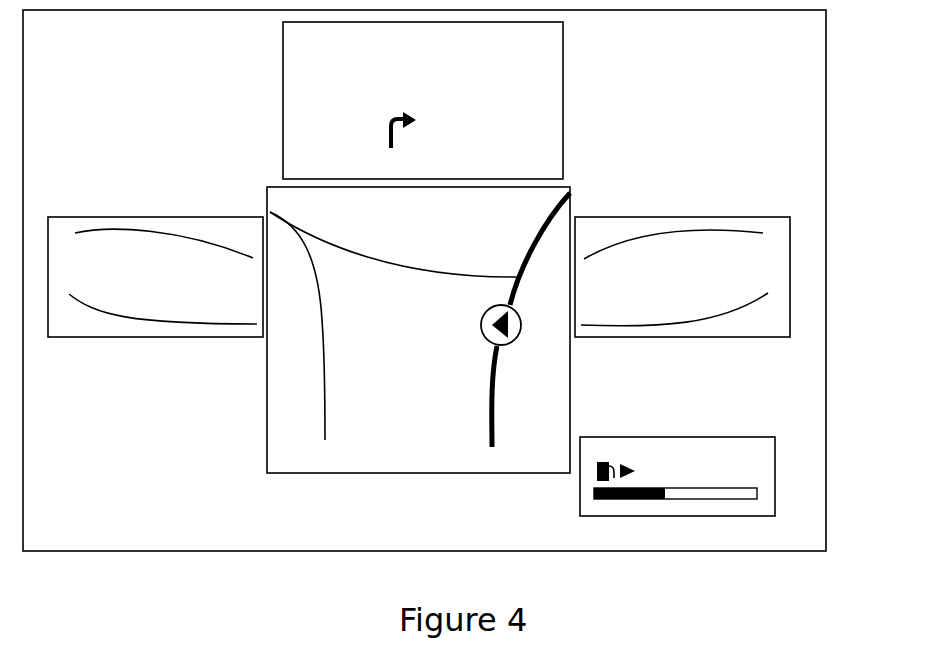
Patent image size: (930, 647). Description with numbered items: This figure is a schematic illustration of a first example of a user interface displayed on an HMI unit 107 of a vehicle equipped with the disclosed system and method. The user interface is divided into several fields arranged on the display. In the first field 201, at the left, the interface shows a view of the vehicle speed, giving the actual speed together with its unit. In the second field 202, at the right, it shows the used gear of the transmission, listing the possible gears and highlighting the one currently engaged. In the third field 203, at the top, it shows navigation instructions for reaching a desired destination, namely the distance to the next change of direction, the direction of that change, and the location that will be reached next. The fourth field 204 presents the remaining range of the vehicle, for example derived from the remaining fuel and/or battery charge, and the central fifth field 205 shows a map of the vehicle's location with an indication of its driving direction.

The HMI unit 107 is at (826, 225).
The first field 201 is at (120, 217).
The second field 202 is at (659, 217).
The third field 203 is at (563, 97).
The fourth field 204 is at (659, 437).
The fifth field 205 is at (267, 420).